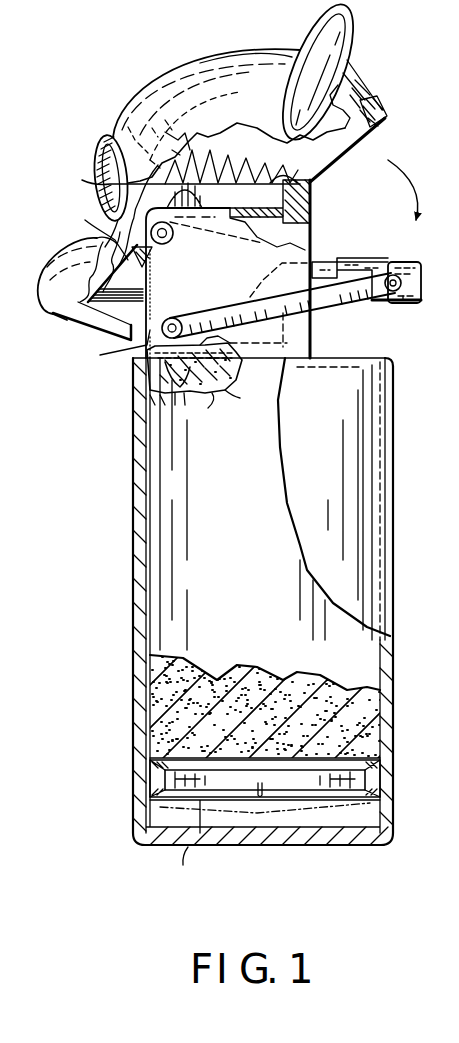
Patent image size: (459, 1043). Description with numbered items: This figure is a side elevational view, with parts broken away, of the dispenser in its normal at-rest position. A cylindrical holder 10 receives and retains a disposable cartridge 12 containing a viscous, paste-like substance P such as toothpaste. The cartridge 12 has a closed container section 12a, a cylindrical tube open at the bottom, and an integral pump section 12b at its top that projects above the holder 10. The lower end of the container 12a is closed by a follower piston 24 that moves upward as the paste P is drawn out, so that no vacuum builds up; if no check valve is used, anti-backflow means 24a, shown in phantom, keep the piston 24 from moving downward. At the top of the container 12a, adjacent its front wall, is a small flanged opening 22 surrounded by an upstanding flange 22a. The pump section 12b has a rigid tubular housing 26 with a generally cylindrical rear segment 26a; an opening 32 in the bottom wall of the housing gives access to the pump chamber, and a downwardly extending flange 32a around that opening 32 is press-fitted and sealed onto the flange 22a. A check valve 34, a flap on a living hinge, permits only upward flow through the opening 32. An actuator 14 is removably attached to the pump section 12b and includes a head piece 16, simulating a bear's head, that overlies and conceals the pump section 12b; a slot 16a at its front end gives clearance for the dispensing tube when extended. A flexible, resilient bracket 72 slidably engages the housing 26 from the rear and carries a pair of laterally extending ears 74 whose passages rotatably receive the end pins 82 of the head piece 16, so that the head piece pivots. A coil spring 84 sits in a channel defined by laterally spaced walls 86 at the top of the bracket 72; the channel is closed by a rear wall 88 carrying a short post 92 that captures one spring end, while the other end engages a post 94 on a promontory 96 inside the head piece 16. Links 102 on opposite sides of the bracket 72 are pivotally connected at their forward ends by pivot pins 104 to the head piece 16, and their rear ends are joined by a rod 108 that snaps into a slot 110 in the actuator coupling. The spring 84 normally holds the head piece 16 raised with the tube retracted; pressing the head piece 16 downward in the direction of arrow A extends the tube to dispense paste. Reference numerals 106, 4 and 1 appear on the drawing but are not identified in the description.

The holder 10 is at (138, 542).
The disposable cartridge 12 is at (104, 598).
The container section 12a is at (147, 678).
The pump section 12b is at (95, 237).
The actuator 14 is at (96, 114).
The head piece 16 is at (247, 57).
The slot 16a is at (60, 318).
The flanged opening 22 is at (200, 393).
The flange 22a is at (172, 413).
The follower piston 24 is at (158, 788).
The anti-backflow means 24a is at (186, 862).
The tubular housing 26 is at (287, 357).
The rear segment 26a is at (313, 232).
The opening 32 is at (208, 315).
The downwardly extending flange 32a is at (243, 373).
The check valve 34 is at (180, 394).
The bracket 72 is at (310, 340).
The ears 74 is at (180, 240).
The end pins 82 is at (163, 245).
The coil spring 84 is at (233, 170).
The laterally spaced walls 86 is at (176, 175).
The wall 88 is at (318, 182).
The short post 92 is at (286, 180).
The post 94 is at (137, 107).
The promontory 96 is at (112, 133).
The links 102 is at (340, 298).
The pivot pins 104 is at (137, 344).
The lever pivot 106 is at (176, 319).
The rod 108 is at (403, 300).
The slot 110 is at (390, 262).
The block 4 is at (422, 288).
The dispenser assembly 1 is at (455, 243).
The arrow A is at (408, 183).
The paste-like substance P is at (163, 715).